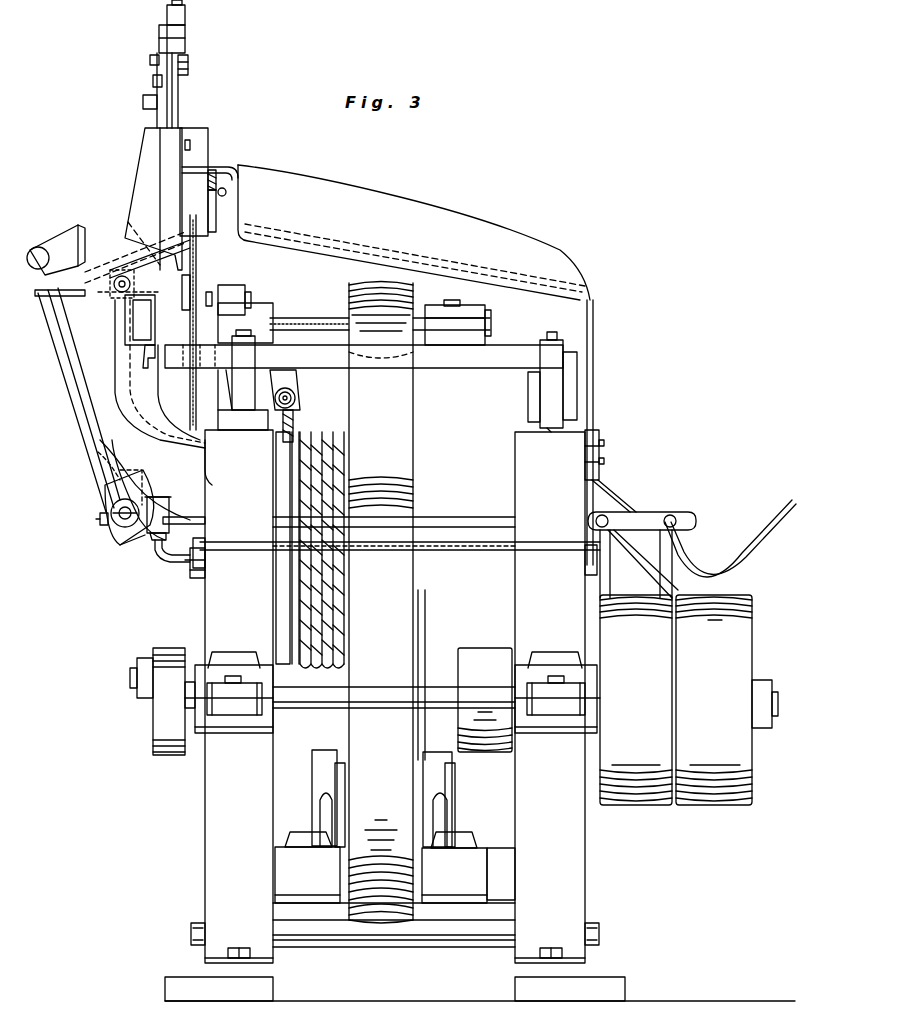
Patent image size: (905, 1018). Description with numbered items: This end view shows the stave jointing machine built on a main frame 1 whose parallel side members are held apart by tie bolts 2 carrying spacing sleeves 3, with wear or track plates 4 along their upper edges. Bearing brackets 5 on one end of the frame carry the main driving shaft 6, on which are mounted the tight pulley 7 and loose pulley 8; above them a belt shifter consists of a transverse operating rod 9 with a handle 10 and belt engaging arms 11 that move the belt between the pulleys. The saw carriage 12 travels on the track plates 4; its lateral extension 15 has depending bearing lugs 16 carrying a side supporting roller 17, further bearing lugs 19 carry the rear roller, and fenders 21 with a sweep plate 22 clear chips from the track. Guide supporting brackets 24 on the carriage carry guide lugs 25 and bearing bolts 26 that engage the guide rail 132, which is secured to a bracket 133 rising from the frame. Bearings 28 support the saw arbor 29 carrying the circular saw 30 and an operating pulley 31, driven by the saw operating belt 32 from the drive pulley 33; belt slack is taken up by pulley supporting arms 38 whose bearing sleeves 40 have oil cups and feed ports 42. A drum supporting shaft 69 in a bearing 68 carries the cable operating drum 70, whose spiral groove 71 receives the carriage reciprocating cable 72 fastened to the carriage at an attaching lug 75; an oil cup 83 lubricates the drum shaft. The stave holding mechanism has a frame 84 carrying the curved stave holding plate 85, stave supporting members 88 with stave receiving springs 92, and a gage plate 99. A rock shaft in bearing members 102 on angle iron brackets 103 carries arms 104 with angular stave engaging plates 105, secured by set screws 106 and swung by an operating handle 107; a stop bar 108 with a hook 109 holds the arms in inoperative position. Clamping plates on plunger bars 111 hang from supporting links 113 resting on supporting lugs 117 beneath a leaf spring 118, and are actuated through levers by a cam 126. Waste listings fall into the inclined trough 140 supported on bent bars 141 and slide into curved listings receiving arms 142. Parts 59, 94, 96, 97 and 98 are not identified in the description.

The main frame 1 is at (395, 696).
The tie bolts 2 is at (189, 934).
The spacing sleeves 3 is at (433, 944).
The wear or track plates 4 is at (580, 438).
The bearing brackets 5 is at (242, 706).
The main driving shaft 6 is at (320, 706).
The tight pulley 7 is at (642, 800).
The loose pulley 8 is at (722, 800).
The operating rod 9 is at (462, 522).
The handle 10 is at (160, 584).
The belt engaging arms 11 is at (656, 605).
The saw carriage 12 is at (310, 318).
The lateral extension 15 is at (520, 353).
The depending bearing lugs 16 is at (570, 392).
The side supporting roller 17 is at (550, 436).
The depending bearing lugs 19 is at (222, 380).
The fenders 21 is at (252, 378).
The sweep plate 22 is at (243, 430).
The guide supporting brackets 24 is at (145, 348).
The guide lugs 25 is at (192, 300).
The bearing bolts 26 is at (150, 345).
The bearings 28 is at (260, 322).
The saw arbor 29 is at (364, 356).
The circular saw 30 is at (198, 250).
The operating pulley 31 is at (381, 324).
The saw operating belt 32 is at (400, 288).
The drive pulley 33 is at (420, 645).
The pulley supporting arms 38 is at (318, 815).
The bearing sleeves 40 is at (395, 875).
The oil cups and feed ports 42 is at (290, 836).
The roller 59 is at (492, 652).
The bearing 68 is at (196, 580).
The drum supporting shaft 69 is at (192, 572).
The cable operating drum 70 is at (276, 495).
The spirally arranged groove 71 is at (290, 590).
The carriage reciprocating cable 72 is at (330, 482).
The attaching lug 75 is at (297, 395).
The oil cup 83 is at (152, 545).
The frame 84 is at (140, 176).
The lower stave holding plate 85 is at (128, 222).
The stave supporting members 88 is at (108, 300).
The stave receiving springs 92 is at (118, 262).
The bracket 94 is at (215, 170).
The pin 96 is at (215, 298).
The block 97 is at (240, 290).
The pad 98 is at (218, 180).
The gage plate 99 is at (216, 213).
The bearing members 102 is at (130, 470).
The angle iron supporting brackets 103 is at (98, 470).
The upwardly projecting arms 104 is at (90, 434).
The angular stave engaging plates 105 is at (75, 240).
The set screws 106 is at (120, 545).
The operating handle 107 is at (98, 520).
The stop bar 108 is at (75, 360).
The hook 109 is at (40, 298).
The plunger bars 111 is at (175, 103).
The supporting links 113 is at (186, 50).
The supporting lugs 117 is at (190, 68).
The leaf spring 118 is at (186, 14).
The cam 126 is at (170, 740).
The guide rail 132 is at (168, 260).
The bracket 133 is at (90, 410).
The inclined chute or trough 140 is at (414, 232).
The bars 141 is at (596, 330).
The curved listings receiving arms 142 is at (752, 545).